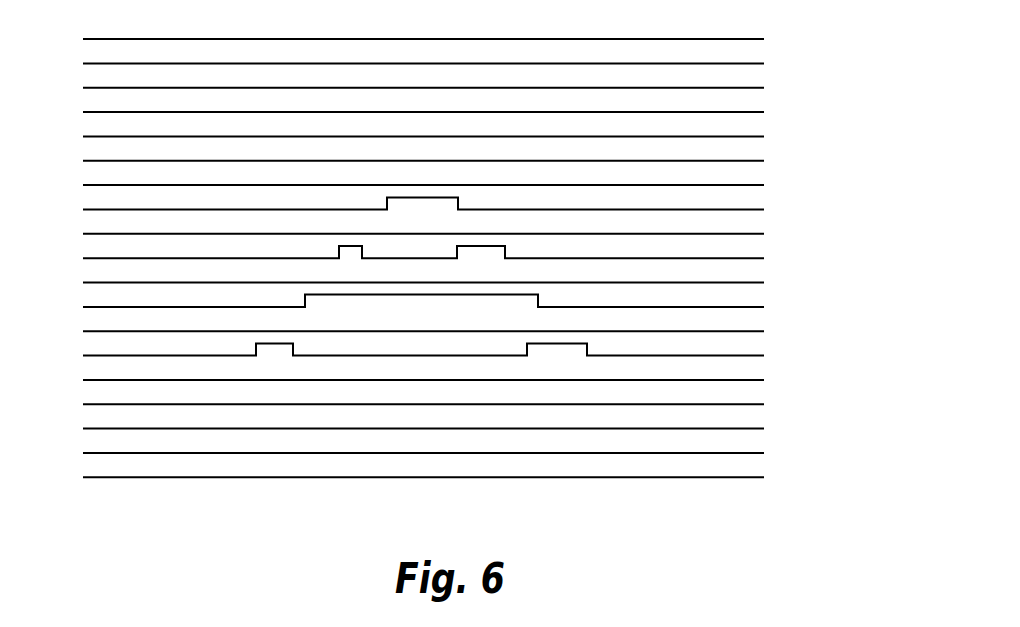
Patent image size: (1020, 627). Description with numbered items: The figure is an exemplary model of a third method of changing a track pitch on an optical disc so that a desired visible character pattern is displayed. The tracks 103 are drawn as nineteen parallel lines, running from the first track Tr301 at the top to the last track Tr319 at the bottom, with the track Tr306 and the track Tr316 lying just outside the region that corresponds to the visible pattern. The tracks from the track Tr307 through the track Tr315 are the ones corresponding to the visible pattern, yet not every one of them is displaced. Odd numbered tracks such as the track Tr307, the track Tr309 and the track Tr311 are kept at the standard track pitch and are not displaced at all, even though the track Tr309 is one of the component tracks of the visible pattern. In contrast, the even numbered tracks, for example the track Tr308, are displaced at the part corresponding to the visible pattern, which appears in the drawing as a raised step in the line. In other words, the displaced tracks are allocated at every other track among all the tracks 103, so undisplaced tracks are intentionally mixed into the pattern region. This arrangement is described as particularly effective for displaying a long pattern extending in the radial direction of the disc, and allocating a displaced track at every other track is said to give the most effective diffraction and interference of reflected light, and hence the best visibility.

The tracks 103 is at (58, 272).
The track Tr301 is at (766, 39).
The track Tr306 is at (766, 161).
The track Tr307 is at (766, 185).
The track Tr308 is at (766, 209).
The track Tr309 is at (766, 233).
The track Tr311 is at (766, 281).
The track Tr315 is at (766, 379).
The track Tr316 is at (766, 404).
The track Tr319 is at (766, 477).